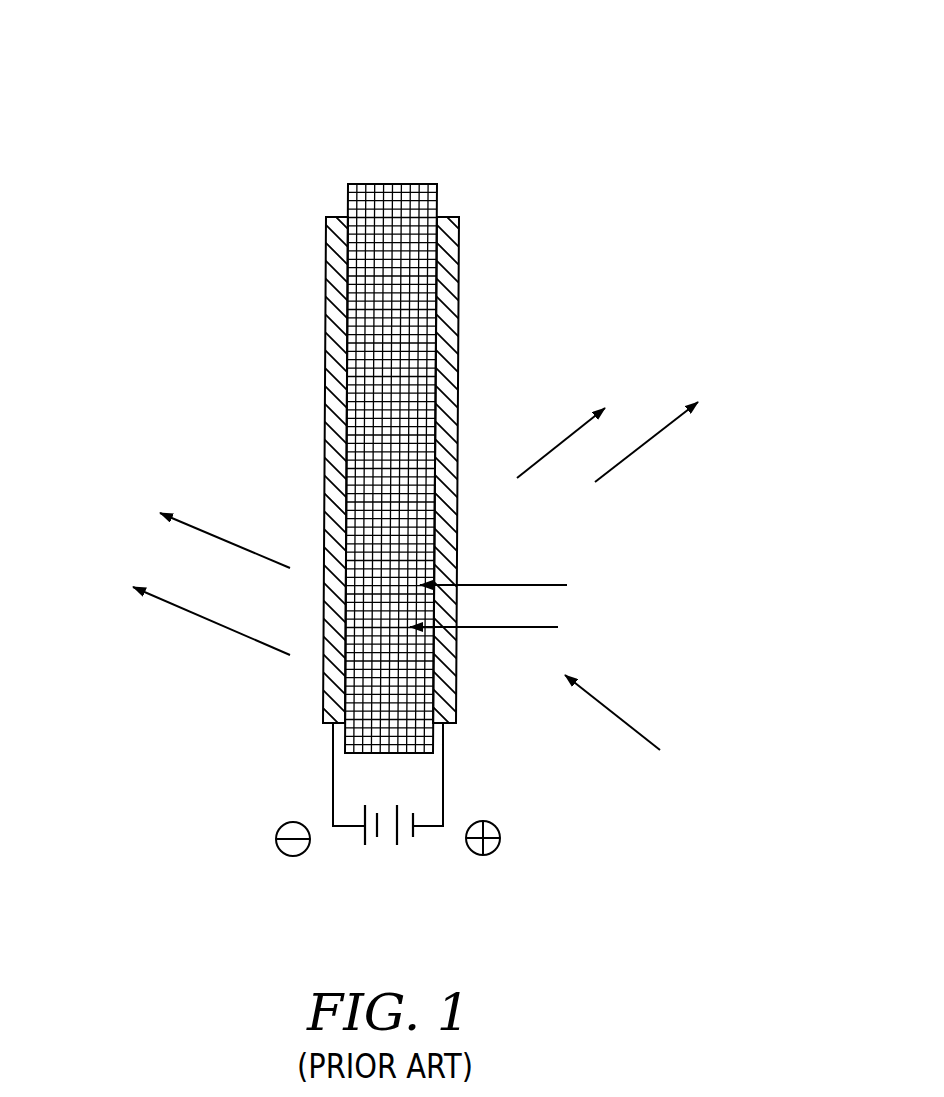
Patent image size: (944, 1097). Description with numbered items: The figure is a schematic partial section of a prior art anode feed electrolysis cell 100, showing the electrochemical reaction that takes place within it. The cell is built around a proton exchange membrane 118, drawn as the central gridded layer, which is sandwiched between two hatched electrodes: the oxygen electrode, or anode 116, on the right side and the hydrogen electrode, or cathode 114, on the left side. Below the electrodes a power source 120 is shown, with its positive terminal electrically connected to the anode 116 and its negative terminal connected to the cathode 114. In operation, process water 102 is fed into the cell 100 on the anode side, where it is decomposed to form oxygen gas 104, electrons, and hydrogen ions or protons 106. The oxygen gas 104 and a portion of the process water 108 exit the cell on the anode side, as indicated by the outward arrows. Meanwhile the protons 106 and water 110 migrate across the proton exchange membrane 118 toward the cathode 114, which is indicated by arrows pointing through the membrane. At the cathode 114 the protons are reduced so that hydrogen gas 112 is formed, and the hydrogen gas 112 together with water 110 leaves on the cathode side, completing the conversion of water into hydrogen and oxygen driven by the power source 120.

The anode feed electrolysis cell 100 is at (421, 437).
The process water 102 is at (657, 747).
The oxygen gas 104 is at (582, 427).
The hydrogen ions (protons) 106 is at (547, 583).
The portion of the process water 108 is at (668, 420).
The water 110 is at (160, 602).
The hydrogen gas 112 is at (193, 525).
The hydrogen electrode (cathode) 114 is at (343, 217).
The oxygen electrode (anode) 116 is at (447, 217).
The proton exchange membrane 118 is at (386, 183).
The power source 120 is at (443, 777).